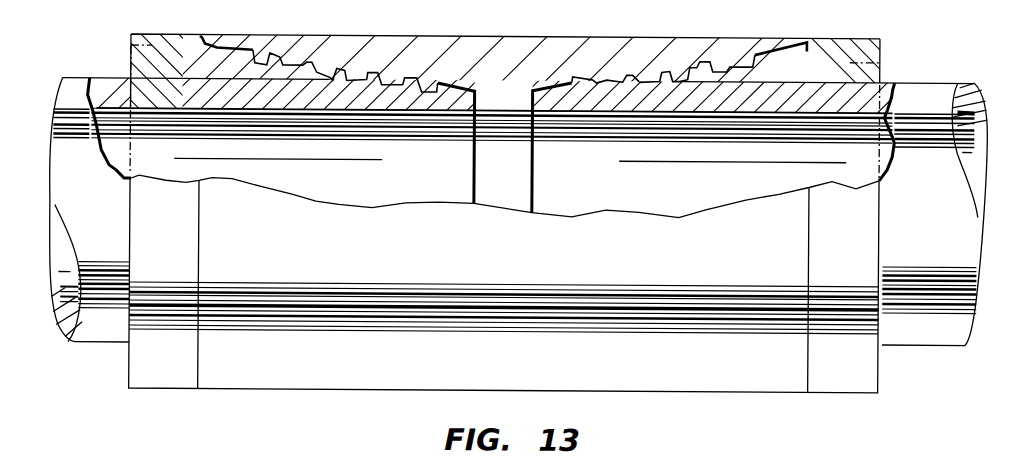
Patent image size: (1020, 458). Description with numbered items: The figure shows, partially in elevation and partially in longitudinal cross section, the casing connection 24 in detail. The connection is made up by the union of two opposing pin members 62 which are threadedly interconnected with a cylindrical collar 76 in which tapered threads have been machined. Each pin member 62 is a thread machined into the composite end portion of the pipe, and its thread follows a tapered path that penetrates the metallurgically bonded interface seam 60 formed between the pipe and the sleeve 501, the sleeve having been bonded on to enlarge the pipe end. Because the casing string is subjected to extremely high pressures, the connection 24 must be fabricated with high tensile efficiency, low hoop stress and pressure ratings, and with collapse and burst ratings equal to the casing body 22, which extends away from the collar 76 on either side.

The casing body 22 is at (92, 77).
The casing connection 24 is at (333, 411).
The metallurgically bonded interface seam 60 is at (123, 142).
The pin member 62 is at (448, 95).
The cylindrical collar 76 is at (430, 33).
The sleeve 501 is at (172, 34).